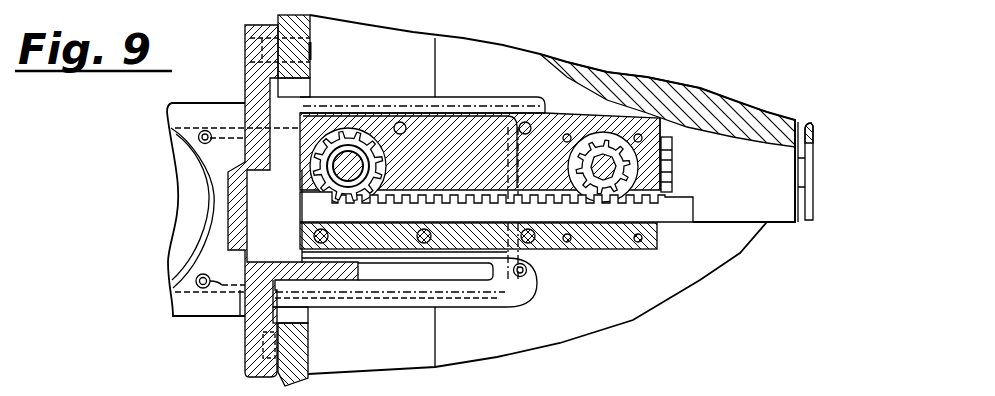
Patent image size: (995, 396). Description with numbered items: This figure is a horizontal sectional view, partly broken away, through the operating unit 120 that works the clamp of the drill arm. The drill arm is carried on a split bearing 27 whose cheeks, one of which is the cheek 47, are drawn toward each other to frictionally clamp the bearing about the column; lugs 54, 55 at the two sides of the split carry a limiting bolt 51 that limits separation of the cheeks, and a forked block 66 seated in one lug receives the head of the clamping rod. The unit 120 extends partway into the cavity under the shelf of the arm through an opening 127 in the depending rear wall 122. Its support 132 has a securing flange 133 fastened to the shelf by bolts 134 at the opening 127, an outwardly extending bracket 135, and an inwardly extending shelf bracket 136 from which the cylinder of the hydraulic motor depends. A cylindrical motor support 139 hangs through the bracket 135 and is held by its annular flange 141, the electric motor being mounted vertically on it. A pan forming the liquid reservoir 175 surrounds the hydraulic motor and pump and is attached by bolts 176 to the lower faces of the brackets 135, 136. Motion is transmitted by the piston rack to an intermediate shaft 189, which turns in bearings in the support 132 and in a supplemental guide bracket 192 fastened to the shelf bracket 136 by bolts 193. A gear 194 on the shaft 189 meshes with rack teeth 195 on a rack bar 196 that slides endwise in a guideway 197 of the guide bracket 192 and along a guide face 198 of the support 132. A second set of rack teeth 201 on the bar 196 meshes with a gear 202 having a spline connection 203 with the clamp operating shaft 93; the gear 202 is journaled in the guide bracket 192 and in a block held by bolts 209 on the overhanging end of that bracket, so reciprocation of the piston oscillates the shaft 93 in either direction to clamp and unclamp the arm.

The bearing 27 is at (684, 74).
The cheek 47 is at (720, 115).
The limiting bolt 51 is at (801, 170).
The lug 54 is at (747, 210).
The lug 55 is at (807, 223).
The block 66 is at (672, 146).
The clamp operating shaft 93 is at (616, 160).
The unit 120 is at (166, 315).
The rear wall 122 is at (308, 28).
The opening 127 is at (297, 89).
The support 132 is at (241, 59).
The securing flange 133 is at (252, 324).
The bolts 134 is at (309, 336).
The bracket 135 is at (183, 112).
The shelf bracket 136 is at (467, 103).
The motor support 139 is at (172, 232).
The annular flange 141 is at (187, 238).
The liquid reservoir 175 is at (460, 290).
The bolts 176 is at (206, 131).
The intermediate shaft 189 is at (341, 156).
The supplemental guide bracket 192 is at (437, 133).
The bolts 193 is at (403, 122).
The gear 194 is at (348, 160).
The rack teeth 195 is at (443, 199).
The rack bar 196 is at (671, 215).
The guideway 197 is at (603, 239).
The guide face 198 is at (307, 217).
The rack teeth 201 is at (593, 200).
The gear 202 is at (576, 135).
The spline connection 203 is at (650, 178).
The bolts 209 is at (643, 243).